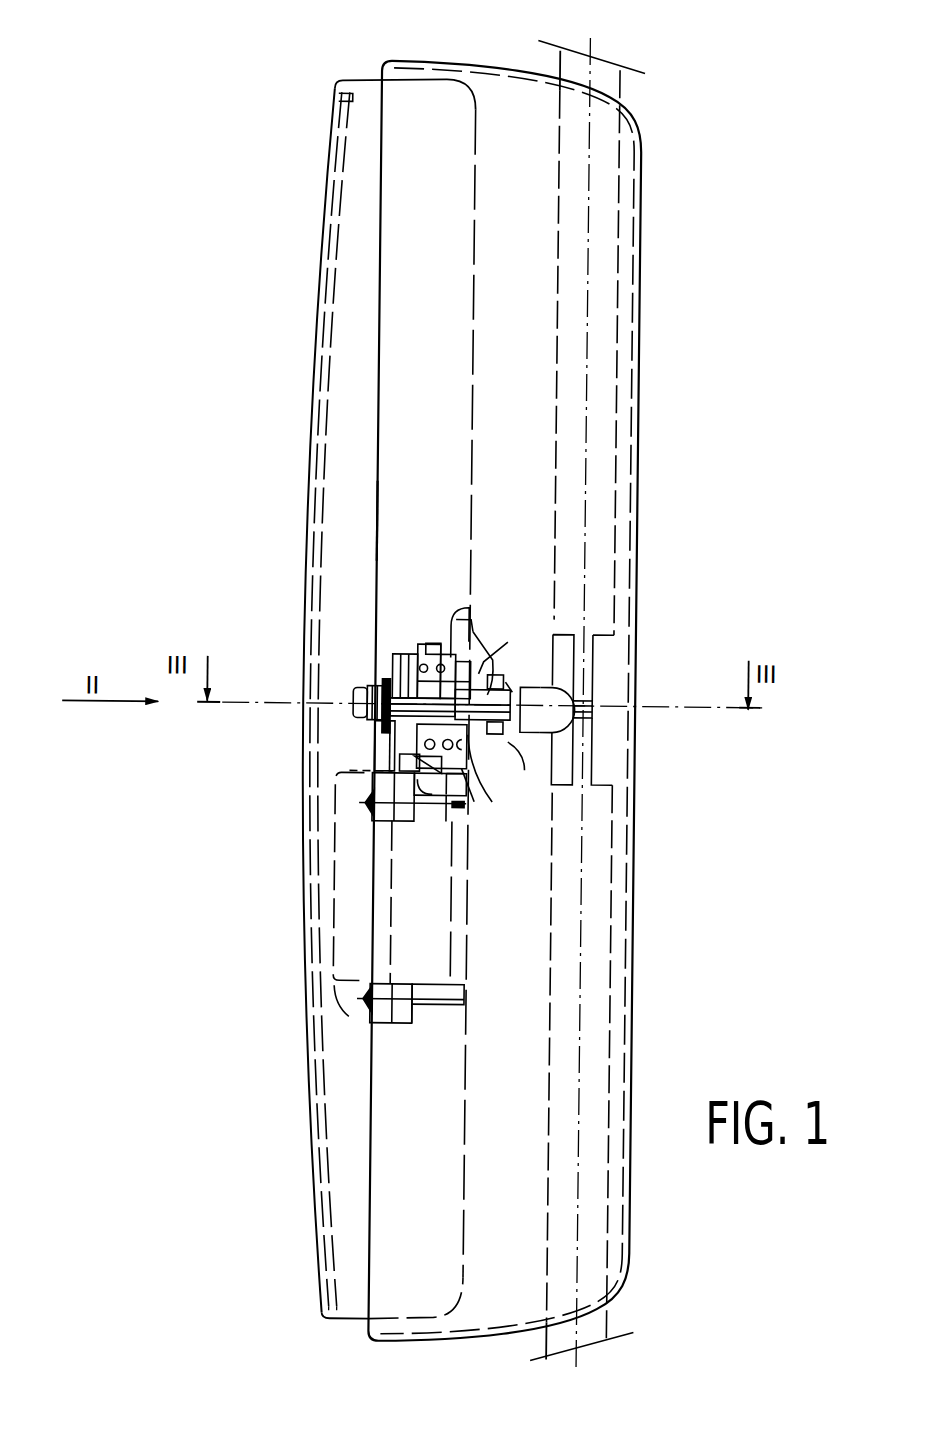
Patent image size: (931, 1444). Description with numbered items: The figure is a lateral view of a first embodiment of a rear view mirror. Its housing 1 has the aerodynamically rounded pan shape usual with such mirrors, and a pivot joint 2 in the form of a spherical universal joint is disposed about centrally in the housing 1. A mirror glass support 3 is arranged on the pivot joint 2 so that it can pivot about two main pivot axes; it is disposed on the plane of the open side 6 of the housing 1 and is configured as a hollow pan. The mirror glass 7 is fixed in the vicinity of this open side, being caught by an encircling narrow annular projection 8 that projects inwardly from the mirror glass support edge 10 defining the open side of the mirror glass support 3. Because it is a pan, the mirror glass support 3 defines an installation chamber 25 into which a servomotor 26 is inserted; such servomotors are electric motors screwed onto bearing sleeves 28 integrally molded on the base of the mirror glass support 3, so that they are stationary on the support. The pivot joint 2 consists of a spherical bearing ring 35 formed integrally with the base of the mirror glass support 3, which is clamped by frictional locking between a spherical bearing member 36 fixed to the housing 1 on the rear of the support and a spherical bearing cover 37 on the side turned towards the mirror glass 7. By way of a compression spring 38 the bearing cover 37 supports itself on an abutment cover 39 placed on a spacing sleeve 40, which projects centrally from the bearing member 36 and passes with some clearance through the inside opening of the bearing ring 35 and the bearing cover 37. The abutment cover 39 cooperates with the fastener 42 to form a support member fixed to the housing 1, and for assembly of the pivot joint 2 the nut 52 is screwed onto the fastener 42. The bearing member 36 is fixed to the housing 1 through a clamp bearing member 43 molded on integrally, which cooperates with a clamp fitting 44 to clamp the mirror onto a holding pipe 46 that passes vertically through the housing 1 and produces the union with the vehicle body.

The housing 1 is at (638, 126).
The pivot joint 2 is at (476, 626).
The mirror glass support 3 is at (471, 1243).
The open side of the housing 6 is at (371, 1211).
The mirror glass 7 is at (326, 323).
The annular projection 8 is at (330, 96).
The mirror glass support edge 10 is at (341, 80).
The installation chamber 25 is at (360, 521).
The servomotor 26 is at (361, 911).
The bearing sleeves 28 is at (436, 808).
The spherical bearing ring 35 is at (486, 647).
The spherical bearing member 36 is at (479, 743).
The bearing cover 37 is at (463, 771).
The compression spring 38 is at (437, 655).
The abutment cover 39 is at (417, 735).
The spacing sleeve 40 is at (486, 665).
The fastener 42 is at (405, 652).
The clamp bearing member 43 is at (557, 758).
The clamp fitting 44 is at (605, 652).
The holding pipe 46 is at (608, 362).
The nut 52 is at (370, 684).